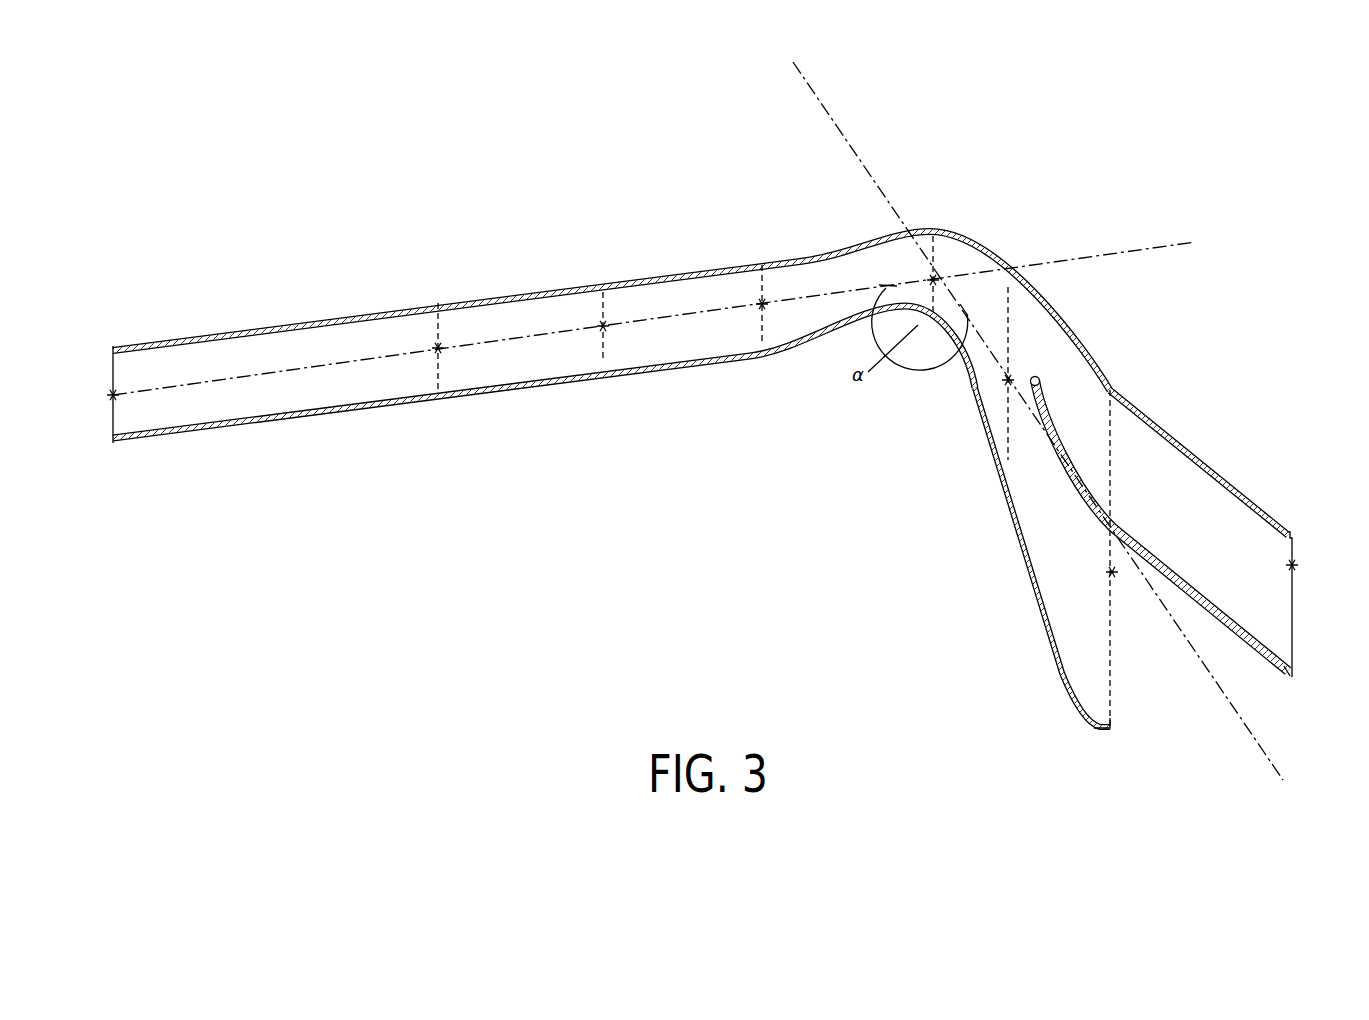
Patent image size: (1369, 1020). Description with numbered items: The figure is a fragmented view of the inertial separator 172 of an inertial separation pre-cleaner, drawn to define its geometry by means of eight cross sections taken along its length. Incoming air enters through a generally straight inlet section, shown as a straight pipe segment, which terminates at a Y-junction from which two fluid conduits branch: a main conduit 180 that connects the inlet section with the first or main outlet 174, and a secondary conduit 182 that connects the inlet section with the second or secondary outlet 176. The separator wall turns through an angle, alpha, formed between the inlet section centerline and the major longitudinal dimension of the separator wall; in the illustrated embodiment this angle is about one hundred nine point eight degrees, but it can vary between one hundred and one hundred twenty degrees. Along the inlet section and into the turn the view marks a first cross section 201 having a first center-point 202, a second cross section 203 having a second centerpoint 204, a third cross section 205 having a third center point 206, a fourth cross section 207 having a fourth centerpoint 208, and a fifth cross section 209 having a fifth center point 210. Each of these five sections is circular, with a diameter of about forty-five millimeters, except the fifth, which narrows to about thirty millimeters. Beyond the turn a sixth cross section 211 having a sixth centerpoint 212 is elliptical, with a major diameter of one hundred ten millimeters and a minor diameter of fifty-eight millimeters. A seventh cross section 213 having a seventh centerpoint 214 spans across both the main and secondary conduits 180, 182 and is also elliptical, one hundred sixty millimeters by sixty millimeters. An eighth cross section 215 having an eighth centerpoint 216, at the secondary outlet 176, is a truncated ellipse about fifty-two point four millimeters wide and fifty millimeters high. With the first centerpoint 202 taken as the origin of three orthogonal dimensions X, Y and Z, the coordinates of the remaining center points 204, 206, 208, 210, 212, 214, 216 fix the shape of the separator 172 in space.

The inertial separator 172 is at (275, 326).
The main outlet 174 is at (1125, 657).
The secondary outlet 176 is at (1305, 604).
The main conduit 180 is at (1018, 532).
The secondary conduit 182 is at (1180, 435).
The first cross section 201 is at (115, 377).
The first center-point 202 is at (100, 395).
The second cross section 203 is at (440, 327).
The second centerpoint 204 is at (425, 348).
The third cross section 205 is at (603, 308).
The third center point 206 is at (590, 326).
The fourth cross section 207 is at (764, 283).
The fourth centerpoint 208 is at (749, 304).
The fifth cross section 209 is at (935, 260).
The fifth center point 210 is at (920, 280).
The sixth cross section 211 is at (1010, 307).
The sixth centerpoint 212 is at (998, 368).
The seventh cross section 213 is at (1110, 672).
The seventh centerpoint 214 is at (1125, 579).
The eighth cross section 215 is at (1285, 670).
The eighth centerpoint 216 is at (1279, 565).